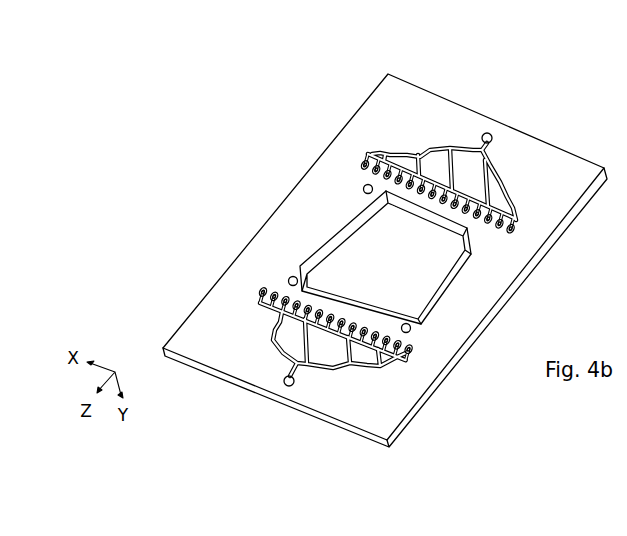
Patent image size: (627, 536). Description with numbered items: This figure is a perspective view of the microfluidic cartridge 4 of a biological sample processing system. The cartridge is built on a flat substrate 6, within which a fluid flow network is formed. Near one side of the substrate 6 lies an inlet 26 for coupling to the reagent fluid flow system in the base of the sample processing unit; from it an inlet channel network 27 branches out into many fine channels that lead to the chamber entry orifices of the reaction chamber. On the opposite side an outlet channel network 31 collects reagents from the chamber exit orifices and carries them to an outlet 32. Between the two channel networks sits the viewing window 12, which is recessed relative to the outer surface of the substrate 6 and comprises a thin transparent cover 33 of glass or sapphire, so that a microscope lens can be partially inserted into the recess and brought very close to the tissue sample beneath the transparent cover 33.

The microfluidic cartridge 4 is at (227, 168).
The substrate 6 is at (541, 168).
The viewing window 12 is at (334, 249).
The inlet 26 is at (284, 379).
The inlet channel network 27 is at (297, 310).
The outlet channel network 31 is at (462, 188).
The outlet 32 is at (488, 133).
The transparent cover 33 is at (372, 248).